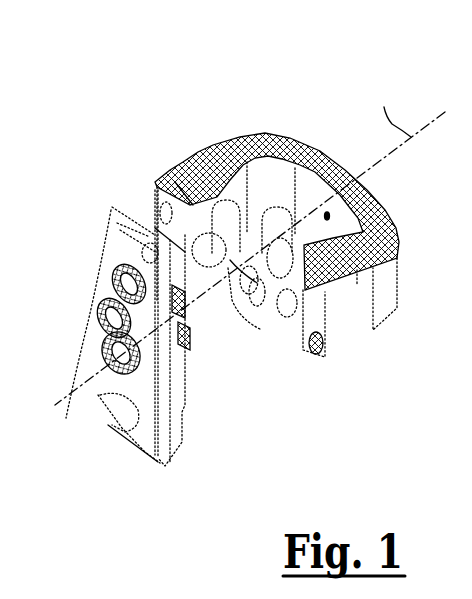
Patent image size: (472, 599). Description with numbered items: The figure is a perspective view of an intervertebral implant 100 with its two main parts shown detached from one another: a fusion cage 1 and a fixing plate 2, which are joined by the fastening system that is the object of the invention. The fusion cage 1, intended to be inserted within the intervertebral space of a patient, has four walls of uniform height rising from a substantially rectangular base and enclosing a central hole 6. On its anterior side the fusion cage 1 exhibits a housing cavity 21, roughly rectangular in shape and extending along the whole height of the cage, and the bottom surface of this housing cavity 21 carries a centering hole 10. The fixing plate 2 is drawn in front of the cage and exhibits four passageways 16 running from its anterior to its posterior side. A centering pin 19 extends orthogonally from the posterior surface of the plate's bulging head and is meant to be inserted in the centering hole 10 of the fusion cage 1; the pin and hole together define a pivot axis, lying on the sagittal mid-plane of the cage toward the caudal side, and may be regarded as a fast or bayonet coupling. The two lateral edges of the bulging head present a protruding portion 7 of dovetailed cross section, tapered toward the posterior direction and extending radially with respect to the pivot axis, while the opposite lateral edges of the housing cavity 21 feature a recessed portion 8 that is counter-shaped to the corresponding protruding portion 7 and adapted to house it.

The intervertebral implant 100 is at (308, 88).
The fusion cage 1 is at (390, 207).
The fixing plate 2 is at (116, 253).
The central hole 6 is at (273, 194).
The protruding portion 7 is at (178, 428).
The recessed portion 8 is at (191, 214).
The centering hole 10 is at (249, 290).
The passageways 16 is at (125, 273).
The centering pin 19 is at (190, 315).
The housing cavity 21 is at (287, 333).